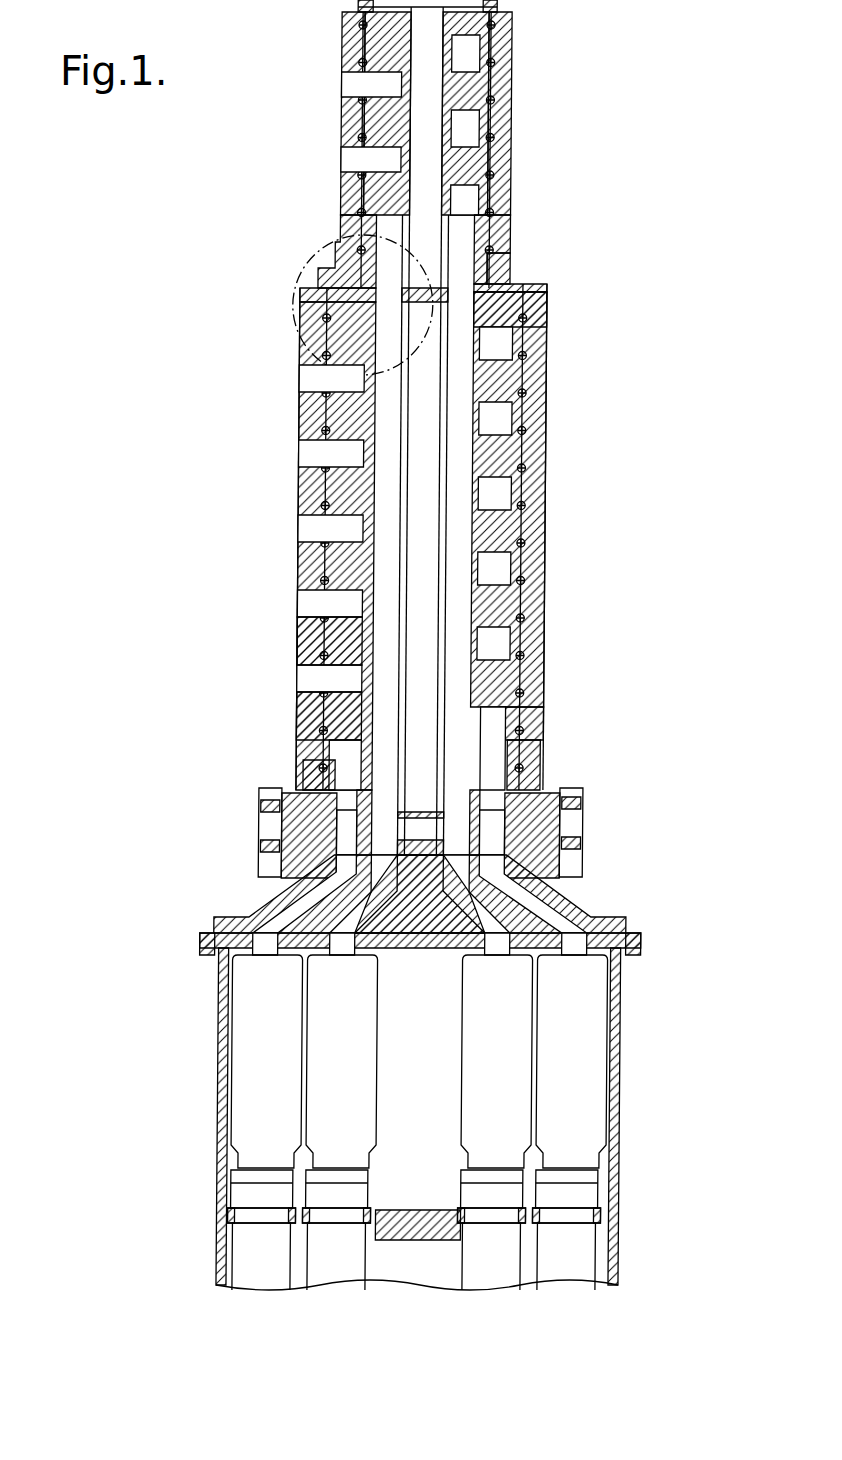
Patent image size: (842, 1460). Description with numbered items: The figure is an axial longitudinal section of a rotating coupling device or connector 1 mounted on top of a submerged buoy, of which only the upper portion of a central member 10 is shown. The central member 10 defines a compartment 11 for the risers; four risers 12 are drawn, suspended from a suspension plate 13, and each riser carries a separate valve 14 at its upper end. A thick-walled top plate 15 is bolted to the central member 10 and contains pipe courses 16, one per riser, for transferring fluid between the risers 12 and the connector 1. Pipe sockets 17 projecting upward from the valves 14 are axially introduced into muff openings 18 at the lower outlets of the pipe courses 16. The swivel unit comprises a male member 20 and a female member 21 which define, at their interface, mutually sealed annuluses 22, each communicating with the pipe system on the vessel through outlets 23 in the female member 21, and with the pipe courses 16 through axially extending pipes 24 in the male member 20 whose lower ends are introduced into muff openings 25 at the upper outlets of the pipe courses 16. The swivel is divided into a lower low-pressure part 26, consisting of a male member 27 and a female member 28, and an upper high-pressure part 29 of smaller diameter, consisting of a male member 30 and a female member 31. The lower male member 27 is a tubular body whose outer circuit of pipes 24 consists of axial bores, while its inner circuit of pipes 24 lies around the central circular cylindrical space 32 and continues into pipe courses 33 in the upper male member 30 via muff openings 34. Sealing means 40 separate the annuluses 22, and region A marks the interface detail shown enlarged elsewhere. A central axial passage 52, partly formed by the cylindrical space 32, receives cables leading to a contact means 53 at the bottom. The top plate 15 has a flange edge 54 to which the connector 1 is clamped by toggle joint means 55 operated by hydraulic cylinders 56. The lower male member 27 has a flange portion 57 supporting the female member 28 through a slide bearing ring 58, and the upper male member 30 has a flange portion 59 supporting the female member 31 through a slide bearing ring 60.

The rotating coupling device or connector 1 is at (634, 312).
The central member of the buoy 10 is at (636, 1018).
The compartment 11 is at (416, 1078).
The risers 12 is at (340, 1250).
The suspension plate 13 is at (437, 1215).
The valve 14 is at (340, 1065).
The top plate 15 is at (437, 920).
The pipe courses 16 is at (347, 905).
The pipe sockets 17 is at (627, 936).
The muff openings 18 is at (629, 932).
The male member 20 is at (548, 370).
The female member 21 is at (552, 440).
The annuluses 22 is at (496, 140).
The outlets 23 is at (534, 508).
The pipe courses 24 is at (397, 578).
The muff openings 25 is at (307, 850).
The lower low-pressure part 26 is at (295, 490).
The male member of the lower part 27 is at (357, 640).
The female member of the lower part 28 is at (343, 702).
The upper high-pressure part 29 is at (330, 68).
The male member of the upper part 30 is at (388, 122).
The female member of the upper part 31 is at (350, 190).
The central circular cylindrical space 32 is at (418, 392).
The pipe courses 33 is at (471, 203).
The muff openings 34 is at (522, 288).
The sealing means 40 is at (496, 62).
The central axial passage 52 is at (436, 178).
The contact means 53 is at (426, 815).
The flange edge 54 is at (581, 853).
The toggle joint means 55 is at (593, 823).
The hydraulic cylinders 56 is at (588, 812).
The flange portion 57 is at (278, 810).
The slide bearing ring 58 is at (309, 790).
The flange portion 59 is at (505, 255).
The slide bearing ring 60 is at (342, 270).
The region A is at (347, 276).